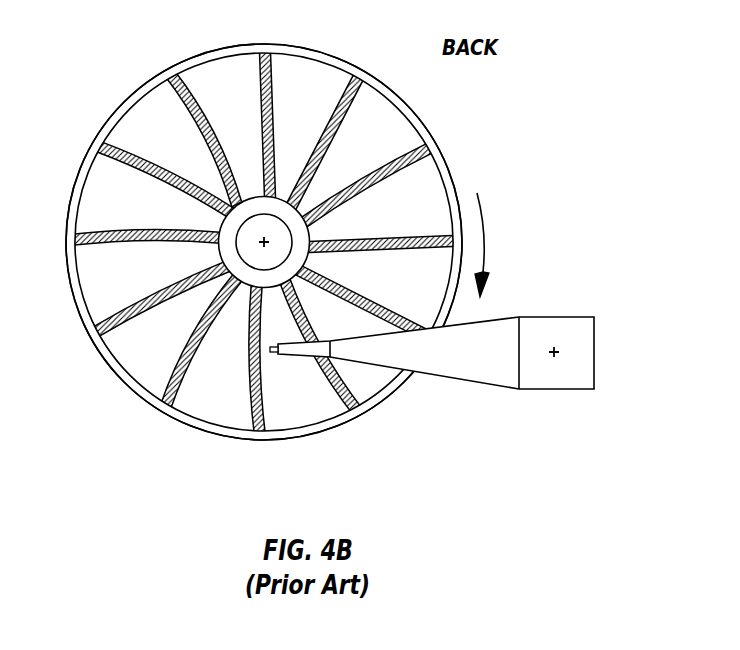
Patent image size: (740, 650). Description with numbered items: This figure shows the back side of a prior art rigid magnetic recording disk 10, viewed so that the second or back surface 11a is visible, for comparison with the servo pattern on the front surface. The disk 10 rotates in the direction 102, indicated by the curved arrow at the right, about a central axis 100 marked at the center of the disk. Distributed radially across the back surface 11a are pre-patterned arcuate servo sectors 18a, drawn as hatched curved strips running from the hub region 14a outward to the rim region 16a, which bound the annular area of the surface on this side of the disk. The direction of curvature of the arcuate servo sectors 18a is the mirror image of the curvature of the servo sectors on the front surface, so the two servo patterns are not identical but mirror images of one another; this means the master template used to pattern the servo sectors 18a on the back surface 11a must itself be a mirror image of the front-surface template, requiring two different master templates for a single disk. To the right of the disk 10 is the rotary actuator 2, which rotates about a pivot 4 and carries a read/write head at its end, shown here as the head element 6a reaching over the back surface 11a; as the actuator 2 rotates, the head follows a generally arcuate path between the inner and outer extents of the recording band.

The rotary actuator 2 is at (571, 322).
The pivot 4 is at (557, 357).
The tool tip 6a is at (274, 353).
The rigid magnetic recording disk 10 is at (107, 138).
The back surface 11a is at (144, 122).
The hub 14a is at (300, 218).
The rim 16a is at (224, 54).
The arcuate servo sectors 18a is at (169, 78).
The central axis 100 is at (265, 246).
The direction of rotation 102 is at (486, 268).